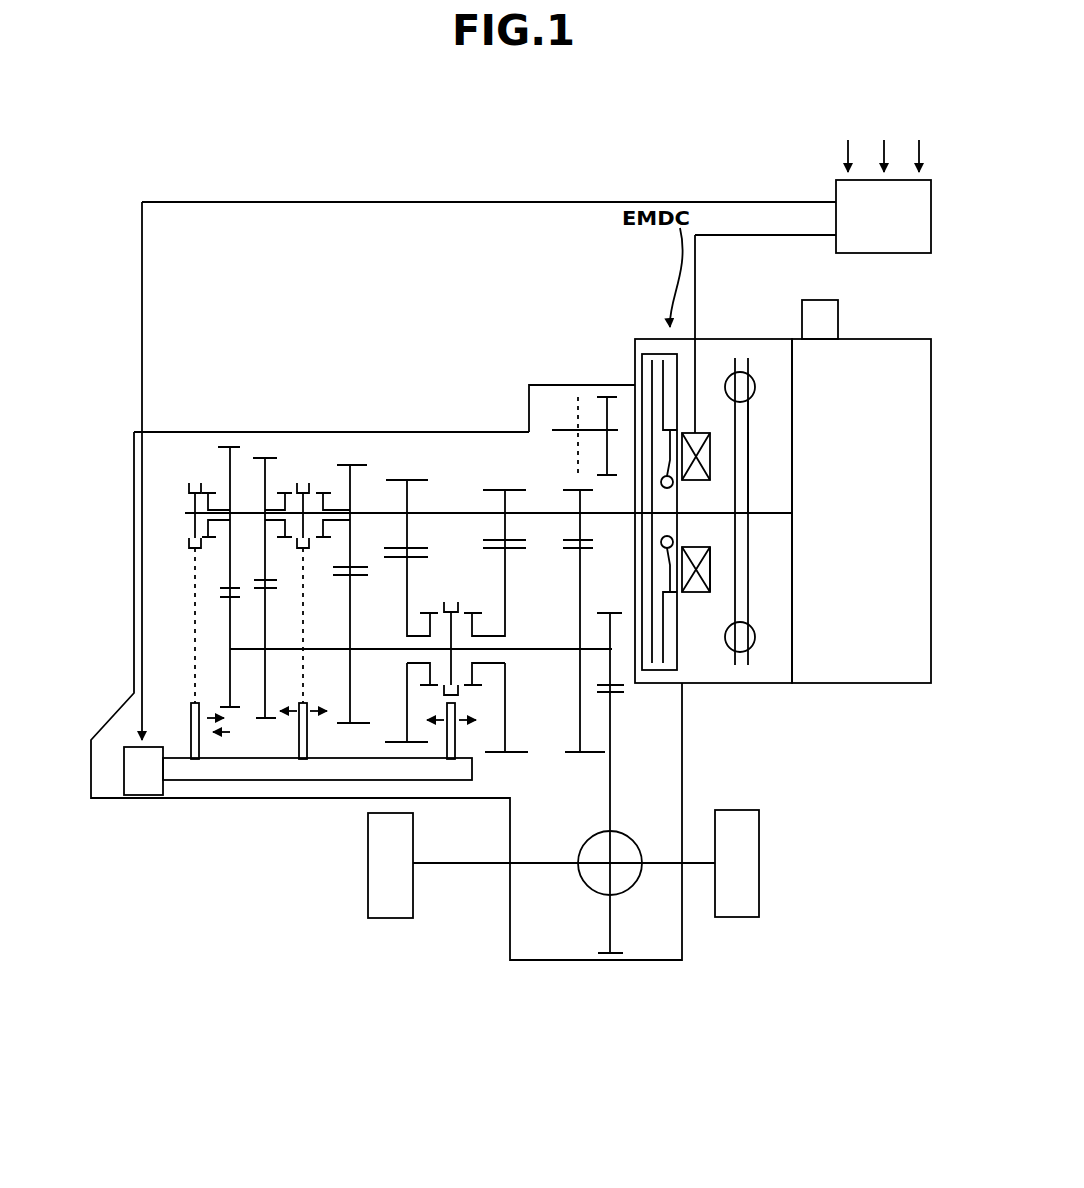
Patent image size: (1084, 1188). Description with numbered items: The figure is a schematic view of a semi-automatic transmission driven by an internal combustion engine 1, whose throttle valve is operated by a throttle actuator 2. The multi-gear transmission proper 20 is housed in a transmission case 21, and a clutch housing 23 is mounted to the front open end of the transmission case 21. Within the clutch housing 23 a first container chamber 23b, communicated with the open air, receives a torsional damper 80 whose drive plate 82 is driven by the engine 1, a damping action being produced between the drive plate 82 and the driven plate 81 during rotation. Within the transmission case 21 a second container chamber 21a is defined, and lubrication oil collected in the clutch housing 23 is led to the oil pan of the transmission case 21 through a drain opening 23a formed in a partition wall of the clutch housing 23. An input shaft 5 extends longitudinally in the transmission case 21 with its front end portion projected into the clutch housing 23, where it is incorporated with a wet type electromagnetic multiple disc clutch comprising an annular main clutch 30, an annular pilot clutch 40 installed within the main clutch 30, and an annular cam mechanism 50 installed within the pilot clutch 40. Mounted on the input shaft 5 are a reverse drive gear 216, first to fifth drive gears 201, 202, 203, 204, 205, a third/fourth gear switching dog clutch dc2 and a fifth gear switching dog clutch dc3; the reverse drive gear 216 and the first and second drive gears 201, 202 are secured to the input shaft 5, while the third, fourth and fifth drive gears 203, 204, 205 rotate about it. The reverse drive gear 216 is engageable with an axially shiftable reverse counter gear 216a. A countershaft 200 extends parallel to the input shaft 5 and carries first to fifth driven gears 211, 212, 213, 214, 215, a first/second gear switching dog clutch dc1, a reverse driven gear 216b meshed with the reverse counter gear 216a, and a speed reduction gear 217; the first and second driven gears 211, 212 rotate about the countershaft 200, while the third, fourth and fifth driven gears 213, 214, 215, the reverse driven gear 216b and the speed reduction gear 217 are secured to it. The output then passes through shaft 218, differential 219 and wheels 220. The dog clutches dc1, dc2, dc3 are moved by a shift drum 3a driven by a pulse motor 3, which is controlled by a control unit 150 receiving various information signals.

The internal combustion engine 1 is at (880, 339).
The throttle actuator 2 is at (838, 312).
The pulse motor 3 is at (135, 757).
The shift drum 3a is at (293, 768).
The input shaft 5 is at (553, 513).
The multi-gear transmission proper 20 is at (497, 420).
The transmission case 21 is at (560, 385).
The second container chamber 21a is at (440, 442).
The clutch housing 23 is at (735, 362).
The drain opening 23a is at (640, 663).
The first container chamber 23b is at (717, 670).
The annular main clutch 30 is at (652, 360).
The annular pilot clutch 40 is at (680, 593).
The annular cam mechanism 50 is at (752, 555).
The torsional damper 80 is at (742, 372).
The driven plate 81 is at (733, 428).
The drive plate 82 is at (750, 447).
The control unit 150 is at (920, 253).
The countershaft 200 is at (330, 655).
The first drive gear 201 is at (504, 490).
The second drive gear 202 is at (406, 480).
The third drive gear 203 is at (351, 465).
The fourth drive gear 204 is at (266, 458).
The fifth drive gear 205 is at (231, 447).
The first driven gear 211 is at (507, 722).
The second driven gear 212 is at (407, 622).
The third driven gear 213 is at (350, 592).
The fourth driven gear 214 is at (264, 617).
The fifth driven gear 215 is at (230, 675).
The reverse drive gear 216 is at (584, 548).
The reverse counter gear 216a is at (612, 395).
The reverse driven gear 216b is at (580, 546).
The speed reduction gear 217 is at (612, 667).
The output shaft 218 is at (610, 803).
The differential 219 is at (600, 880).
The drive wheel 220 is at (383, 900).
The first/second gear switching dog clutch dc1 is at (451, 602).
The third/fourth gear switching dog clutch dc2 is at (303, 483).
The fifth gear switching dog clutch dc3 is at (194, 482).